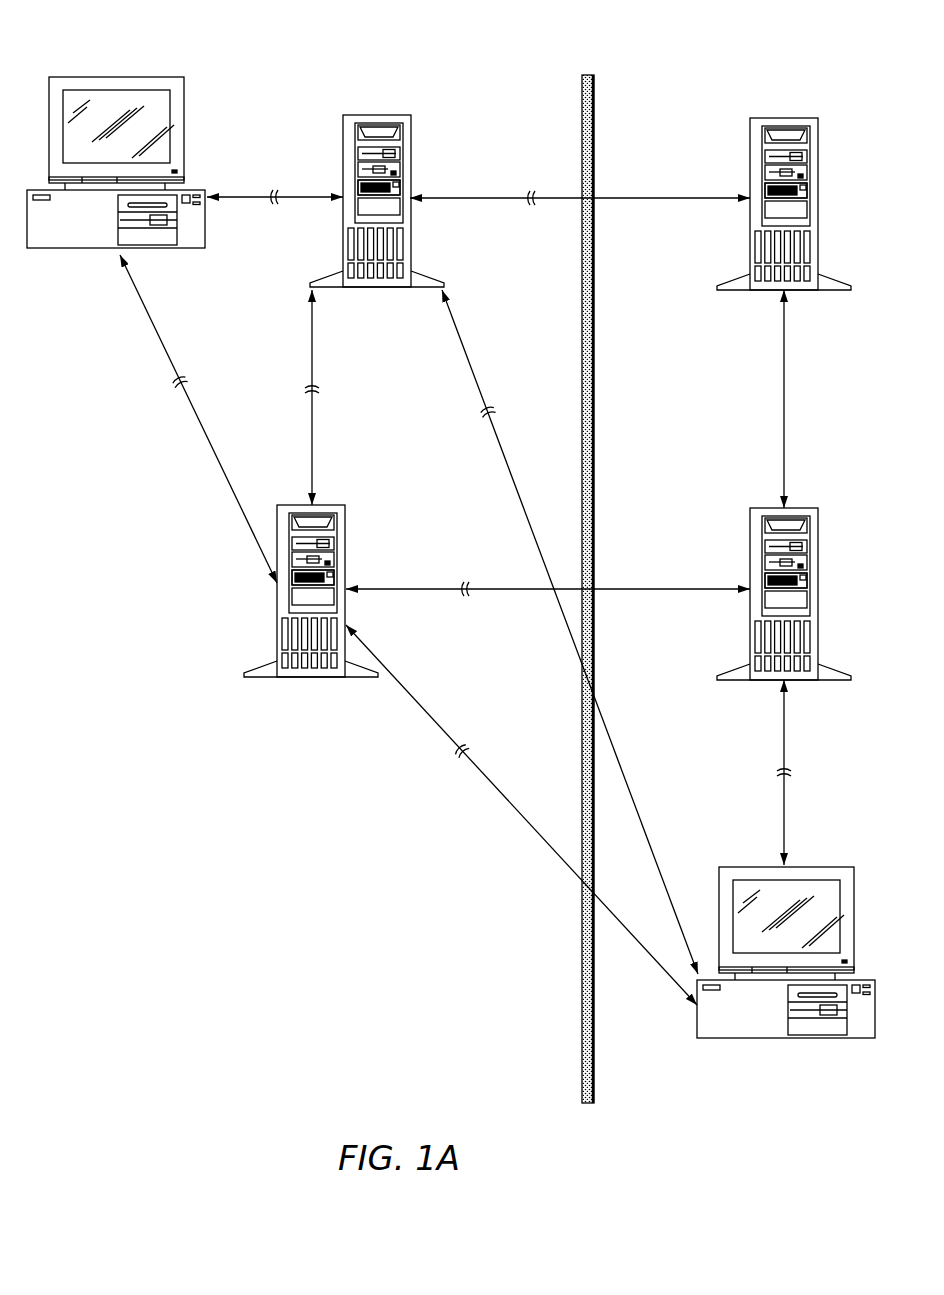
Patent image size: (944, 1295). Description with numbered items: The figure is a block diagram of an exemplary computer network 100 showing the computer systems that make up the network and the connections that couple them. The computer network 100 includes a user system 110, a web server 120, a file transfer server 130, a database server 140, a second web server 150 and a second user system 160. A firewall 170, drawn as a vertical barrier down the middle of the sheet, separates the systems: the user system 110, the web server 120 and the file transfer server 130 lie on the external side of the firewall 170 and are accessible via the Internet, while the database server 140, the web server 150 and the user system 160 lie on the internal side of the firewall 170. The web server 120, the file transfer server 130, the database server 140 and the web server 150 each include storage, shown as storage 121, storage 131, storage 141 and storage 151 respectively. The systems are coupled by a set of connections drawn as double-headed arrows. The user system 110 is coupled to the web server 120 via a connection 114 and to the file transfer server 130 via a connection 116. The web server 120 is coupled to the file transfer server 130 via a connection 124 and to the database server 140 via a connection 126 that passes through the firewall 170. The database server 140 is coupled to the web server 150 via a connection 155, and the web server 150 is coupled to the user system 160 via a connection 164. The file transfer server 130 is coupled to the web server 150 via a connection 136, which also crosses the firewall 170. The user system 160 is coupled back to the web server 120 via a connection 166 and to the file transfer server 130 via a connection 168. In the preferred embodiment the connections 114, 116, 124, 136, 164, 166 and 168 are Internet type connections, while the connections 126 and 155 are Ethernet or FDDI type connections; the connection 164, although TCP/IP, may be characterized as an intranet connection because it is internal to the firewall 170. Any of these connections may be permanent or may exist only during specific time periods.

The computer network 100 is at (576, 34).
The user system 110 is at (132, 68).
The connection 114 is at (290, 181).
The connection 116 is at (165, 408).
The web server 120 is at (391, 103).
The storage 121 is at (401, 188).
The connection 124 is at (360, 402).
The connection 126 is at (546, 181).
The file transfer server 130 is at (330, 769).
The storage 131 is at (330, 580).
The connection 136 is at (478, 575).
The database server 140 is at (797, 103).
The storage 141 is at (808, 191).
The web server 150 is at (874, 526).
The storage 151 is at (766, 577).
The connection 155 is at (788, 382).
The user system 160 is at (796, 1103).
The connection 164 is at (836, 786).
The connection 166 is at (540, 419).
The connection 168 is at (508, 743).
The firewall 170 is at (582, 1083).